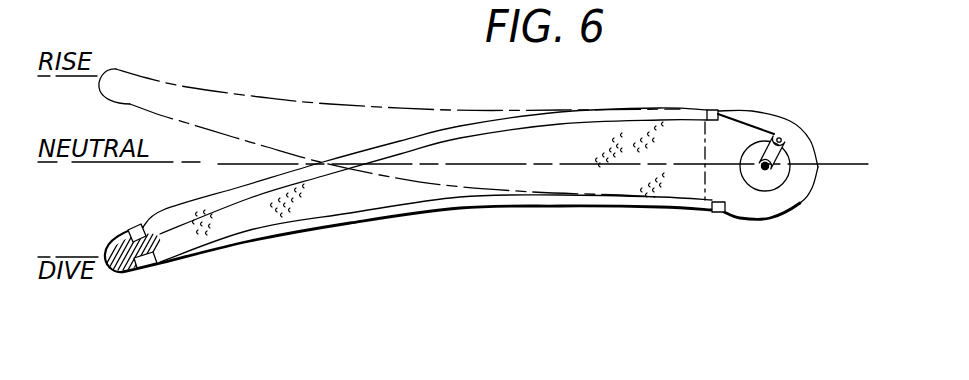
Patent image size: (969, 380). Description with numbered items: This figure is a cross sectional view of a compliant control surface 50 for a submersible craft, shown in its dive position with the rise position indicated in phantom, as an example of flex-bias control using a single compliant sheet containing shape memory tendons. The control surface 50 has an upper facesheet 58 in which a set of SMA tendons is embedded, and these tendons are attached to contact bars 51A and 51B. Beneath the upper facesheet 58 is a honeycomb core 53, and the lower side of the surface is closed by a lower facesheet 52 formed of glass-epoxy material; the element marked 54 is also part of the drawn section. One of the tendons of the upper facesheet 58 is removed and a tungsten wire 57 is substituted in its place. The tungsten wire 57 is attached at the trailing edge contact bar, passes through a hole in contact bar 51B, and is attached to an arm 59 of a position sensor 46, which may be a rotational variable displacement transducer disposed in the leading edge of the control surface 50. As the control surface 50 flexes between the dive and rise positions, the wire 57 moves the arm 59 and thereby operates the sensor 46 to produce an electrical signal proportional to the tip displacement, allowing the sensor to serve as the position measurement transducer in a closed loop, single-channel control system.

The position sensor 46 is at (752, 181).
The compliant control surface 50 is at (780, 86).
The contact bar 51A is at (713, 110).
The contact bar 51B is at (132, 233).
The lower facesheet 52 is at (332, 221).
The honeycomb core 53 is at (178, 237).
The upper inner skin 54 is at (163, 212).
The tungsten wire 57 is at (770, 119).
The upper facesheet 58 is at (407, 139).
The arm 59 is at (784, 143).